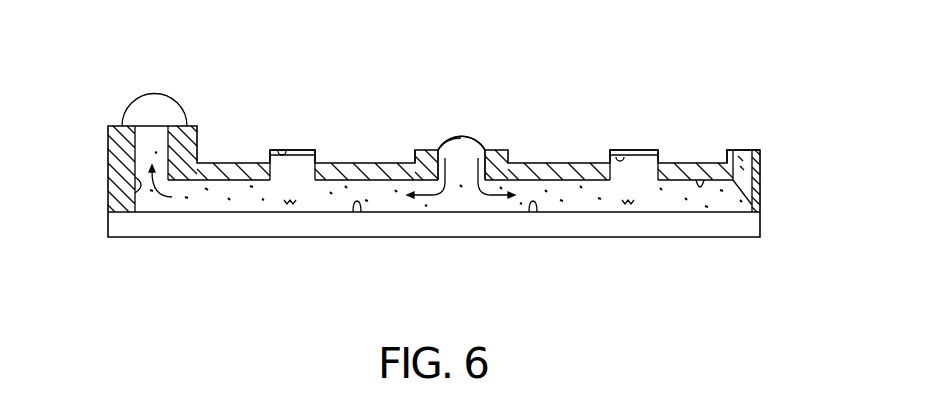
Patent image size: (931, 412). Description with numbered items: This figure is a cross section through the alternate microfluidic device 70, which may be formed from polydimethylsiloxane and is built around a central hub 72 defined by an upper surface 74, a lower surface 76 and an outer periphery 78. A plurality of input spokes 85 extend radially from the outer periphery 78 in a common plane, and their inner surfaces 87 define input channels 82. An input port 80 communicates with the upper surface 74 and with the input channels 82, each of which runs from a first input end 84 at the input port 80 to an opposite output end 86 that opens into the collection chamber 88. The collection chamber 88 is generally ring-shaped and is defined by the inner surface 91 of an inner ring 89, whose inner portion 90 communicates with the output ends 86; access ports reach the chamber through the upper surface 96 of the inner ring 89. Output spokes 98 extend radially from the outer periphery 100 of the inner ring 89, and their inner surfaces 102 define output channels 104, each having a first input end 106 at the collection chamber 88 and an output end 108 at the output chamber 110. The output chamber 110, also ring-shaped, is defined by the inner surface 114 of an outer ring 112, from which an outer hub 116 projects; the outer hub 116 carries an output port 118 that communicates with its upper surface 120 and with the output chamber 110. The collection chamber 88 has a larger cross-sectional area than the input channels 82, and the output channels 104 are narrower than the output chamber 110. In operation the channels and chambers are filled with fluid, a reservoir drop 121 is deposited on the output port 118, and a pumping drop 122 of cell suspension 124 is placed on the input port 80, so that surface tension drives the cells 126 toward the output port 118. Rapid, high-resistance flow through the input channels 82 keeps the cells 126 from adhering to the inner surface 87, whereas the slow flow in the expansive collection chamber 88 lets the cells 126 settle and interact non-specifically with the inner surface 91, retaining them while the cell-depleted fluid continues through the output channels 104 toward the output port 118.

The microfluidic device 70 is at (777, 249).
The central hub 72 is at (514, 146).
The upper surface 74 is at (423, 148).
The lower surface 76 is at (447, 238).
The outer periphery 78 is at (415, 152).
The input port 80 is at (476, 146).
The input channel 82 is at (388, 200).
The first input end 84 is at (421, 220).
The input spoke 85 is at (333, 158).
The output end 86 is at (303, 217).
The inner surface 87 is at (357, 212).
The collection chamber 88 is at (282, 190).
The inner ring 89 is at (257, 146).
The inner portion 90 is at (297, 148).
The inner surface 91 is at (280, 148).
The upper surface 96 is at (648, 170).
The output spoke 98 is at (221, 158).
The outer periphery 100 is at (663, 160).
The inner surface 102 is at (700, 180).
The output channel 104 is at (720, 203).
The first input end 106 is at (254, 209).
The output end 108 is at (182, 216).
The output chamber 110 is at (743, 160).
The outer ring 112 is at (767, 142).
The inner surface 114 is at (760, 181).
The outer hub 116 is at (100, 156).
The output port 118 is at (130, 186).
The upper surface 120 is at (183, 125).
The reservoir drop 121 is at (133, 100).
The pumping drop 122 is at (462, 139).
The cell suspension 124 is at (447, 147).
The cells 126 is at (437, 147).